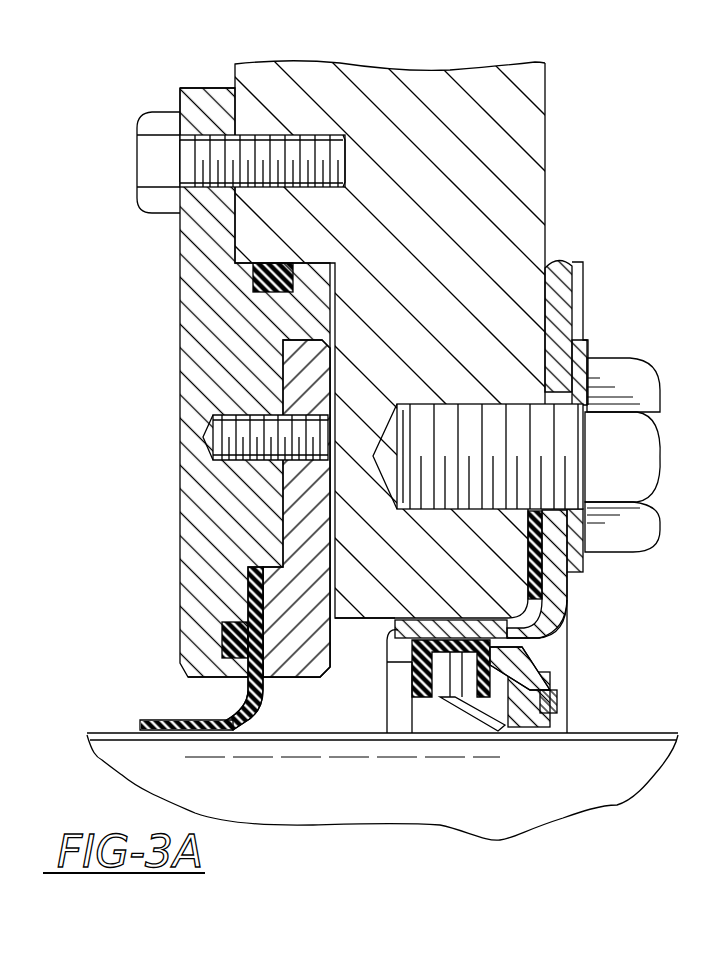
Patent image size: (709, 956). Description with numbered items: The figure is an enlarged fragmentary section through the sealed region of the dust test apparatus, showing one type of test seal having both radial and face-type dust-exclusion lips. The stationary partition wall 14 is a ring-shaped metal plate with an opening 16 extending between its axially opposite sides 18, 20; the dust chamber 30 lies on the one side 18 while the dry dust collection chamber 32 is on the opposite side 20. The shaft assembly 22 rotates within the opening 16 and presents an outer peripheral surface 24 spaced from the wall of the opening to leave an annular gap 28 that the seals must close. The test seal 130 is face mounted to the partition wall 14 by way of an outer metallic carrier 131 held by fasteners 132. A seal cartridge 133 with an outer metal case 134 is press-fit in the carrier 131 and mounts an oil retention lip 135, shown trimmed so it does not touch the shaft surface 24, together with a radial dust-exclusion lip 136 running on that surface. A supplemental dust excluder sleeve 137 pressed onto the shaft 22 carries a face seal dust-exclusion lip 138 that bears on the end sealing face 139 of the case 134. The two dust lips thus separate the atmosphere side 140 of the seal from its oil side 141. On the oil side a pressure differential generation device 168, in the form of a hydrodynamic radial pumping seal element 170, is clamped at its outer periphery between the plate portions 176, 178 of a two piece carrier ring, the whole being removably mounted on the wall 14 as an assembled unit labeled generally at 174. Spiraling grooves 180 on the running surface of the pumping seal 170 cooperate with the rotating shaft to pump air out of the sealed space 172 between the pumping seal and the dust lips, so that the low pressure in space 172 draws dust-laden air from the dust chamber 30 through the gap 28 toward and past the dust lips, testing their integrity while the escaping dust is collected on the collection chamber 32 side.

The partition wall 14 is at (473, 80).
The side of the wall 18 is at (548, 110).
The side of the wall 20 is at (235, 75).
The test seal 130 is at (603, 268).
The outer metallic carrier 131 is at (577, 305).
The fasteners 132 is at (635, 372).
The hub assembly 174 is at (180, 265).
The plate portion 176 is at (195, 317).
The plate portion 178 is at (293, 387).
The dust collection chamber 32 is at (127, 521).
The dust chamber 30 is at (700, 574).
The pressure differential generation device 168 is at (168, 725).
The hydrodynamic radial pumping seal element 170 is at (198, 700).
The oil side 141 is at (160, 728).
The opening 16 is at (568, 603).
The face seal dust-exclusion lip 138 is at (548, 643).
The end sealing face 139 is at (503, 657).
The supplemental dust excluder sleeve 137 is at (570, 717).
The atmosphere side 140 is at (580, 722).
The seal cartridge 133 is at (423, 622).
The annular gap 28 is at (352, 620).
The spiraling grooves 180 is at (168, 733).
The sealed space 172 is at (293, 700).
The outer peripheral surface 24 is at (368, 726).
The outer metal case 134 is at (420, 700).
The oil retention lip 135 is at (460, 705).
The radial dust-exclusion lip 136 is at (470, 713).
The shaft assembly 22 is at (592, 790).